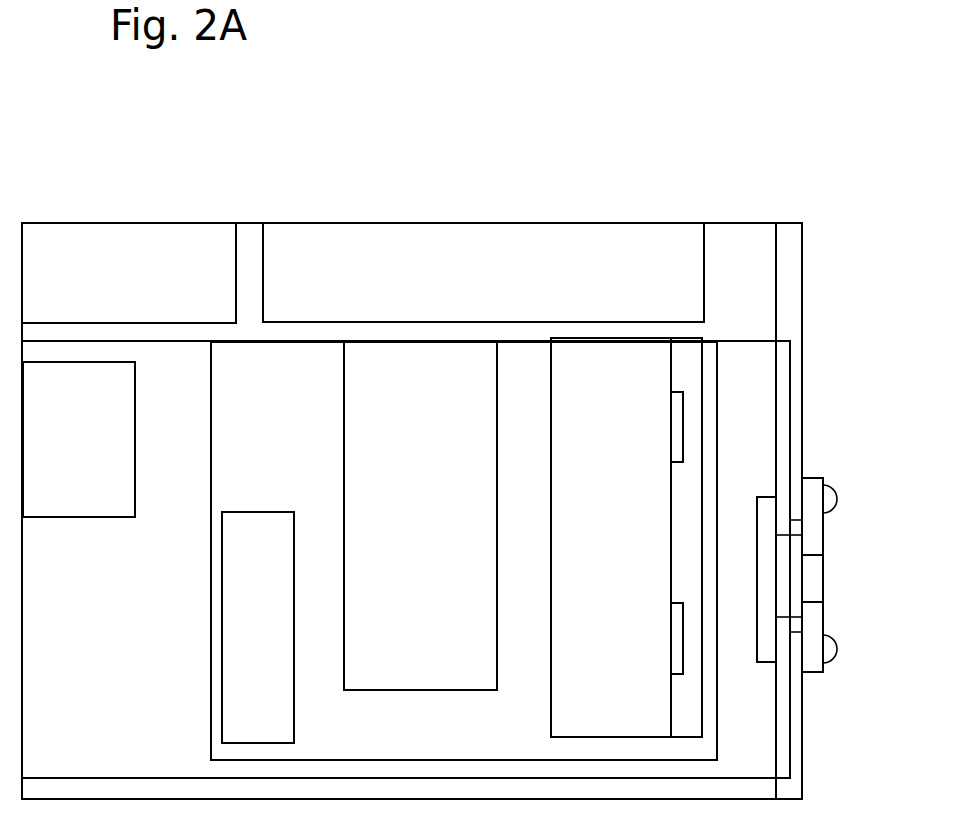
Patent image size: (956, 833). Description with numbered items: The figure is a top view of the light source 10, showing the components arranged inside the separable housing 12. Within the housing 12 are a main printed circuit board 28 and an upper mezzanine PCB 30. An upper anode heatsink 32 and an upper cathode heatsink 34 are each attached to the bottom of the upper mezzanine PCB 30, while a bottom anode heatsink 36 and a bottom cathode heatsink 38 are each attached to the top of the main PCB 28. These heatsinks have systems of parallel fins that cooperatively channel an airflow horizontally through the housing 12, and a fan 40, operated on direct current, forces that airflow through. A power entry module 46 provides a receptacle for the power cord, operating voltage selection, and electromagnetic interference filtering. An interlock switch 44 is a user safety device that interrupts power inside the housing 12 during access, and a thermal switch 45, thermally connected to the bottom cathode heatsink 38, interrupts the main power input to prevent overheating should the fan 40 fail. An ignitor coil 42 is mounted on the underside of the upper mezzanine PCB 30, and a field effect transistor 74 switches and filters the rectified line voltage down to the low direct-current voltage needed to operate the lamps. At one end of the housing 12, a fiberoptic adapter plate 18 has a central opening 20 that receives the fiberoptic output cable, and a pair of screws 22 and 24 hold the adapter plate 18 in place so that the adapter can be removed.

The light source 10 is at (458, 178).
The separable housing 12 is at (802, 299).
The fiberoptic adapter plate 18 is at (832, 535).
The central opening 20 is at (825, 590).
The screw 22 is at (840, 497).
The screw 24 is at (837, 662).
The main printed circuit board 28 is at (464, 551).
The upper mezzanine PCB 30 is at (303, 424).
The upper anode heatsink 32 is at (420, 516).
The bottom anode heatsink 36 is at (420, 525).
The upper cathode heatsink 34 is at (626, 537).
The bottom cathode heatsink 38 is at (632, 422).
The fan 40 is at (495, 286).
The ignitor coil 42 is at (267, 655).
The interlock switch 44 is at (90, 430).
The thermal switch 45 is at (672, 438).
The power entry module 46 is at (128, 290).
The field effect transistor 74 is at (675, 657).